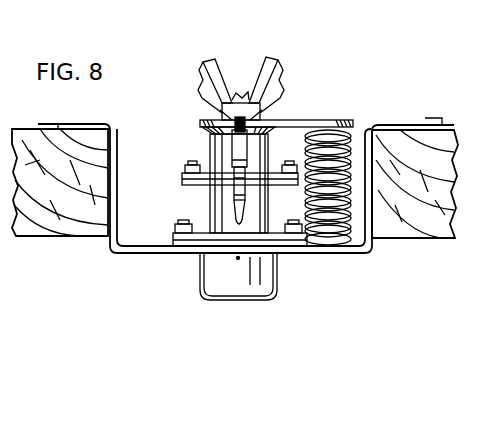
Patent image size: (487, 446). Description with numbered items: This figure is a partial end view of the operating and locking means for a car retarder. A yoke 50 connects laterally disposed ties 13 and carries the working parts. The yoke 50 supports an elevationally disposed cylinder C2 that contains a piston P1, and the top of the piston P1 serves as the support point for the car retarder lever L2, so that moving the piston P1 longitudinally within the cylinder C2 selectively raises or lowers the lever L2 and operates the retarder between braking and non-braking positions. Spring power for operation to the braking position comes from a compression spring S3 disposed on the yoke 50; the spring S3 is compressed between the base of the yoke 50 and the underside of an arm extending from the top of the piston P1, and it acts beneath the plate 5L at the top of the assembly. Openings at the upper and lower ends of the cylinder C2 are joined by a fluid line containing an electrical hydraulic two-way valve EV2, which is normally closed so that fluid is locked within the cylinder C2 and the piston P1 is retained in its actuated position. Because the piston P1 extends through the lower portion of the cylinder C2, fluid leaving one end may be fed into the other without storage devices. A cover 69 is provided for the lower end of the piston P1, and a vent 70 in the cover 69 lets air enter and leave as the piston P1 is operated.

The ties 13 is at (66, 236).
The yoke 50 is at (364, 248).
The car retarder lever L2 is at (220, 67).
The plate 5L is at (298, 122).
The compression spring S3 is at (345, 140).
The cylinder C2 is at (208, 210).
The piston P1 is at (212, 150).
The electrical hydraulic two-way valve EV2 is at (208, 187).
The cover 69 is at (204, 289).
The vent 70 is at (239, 259).